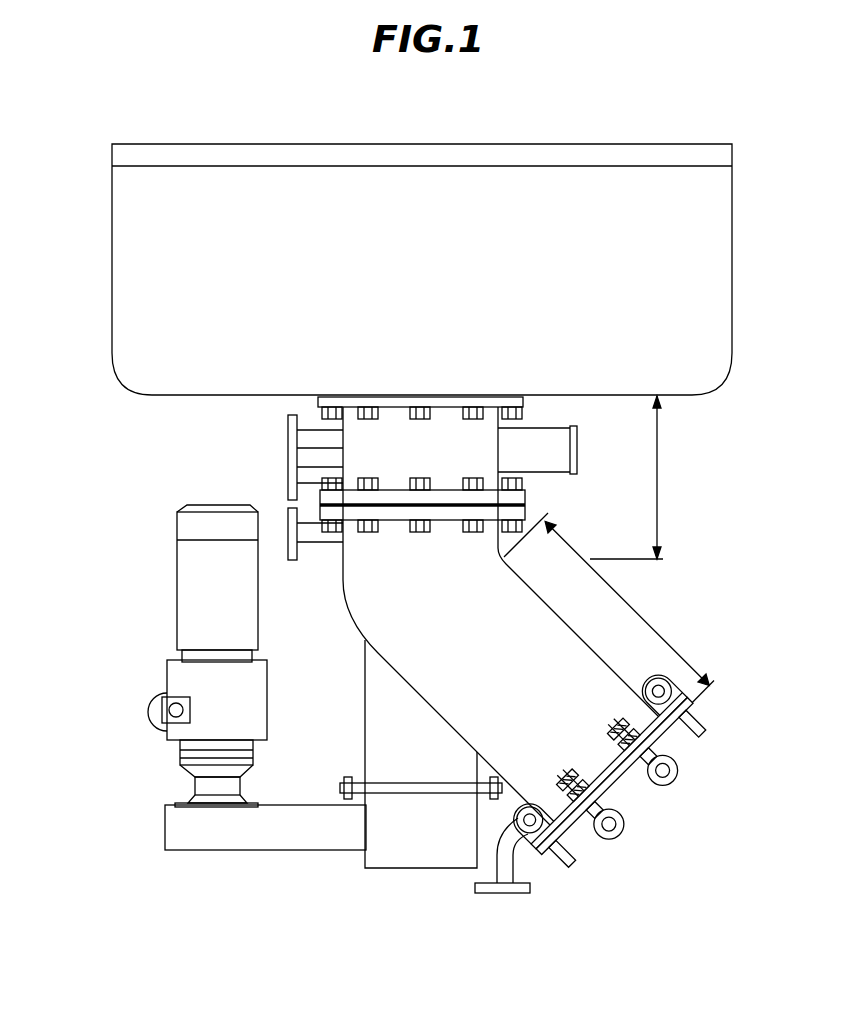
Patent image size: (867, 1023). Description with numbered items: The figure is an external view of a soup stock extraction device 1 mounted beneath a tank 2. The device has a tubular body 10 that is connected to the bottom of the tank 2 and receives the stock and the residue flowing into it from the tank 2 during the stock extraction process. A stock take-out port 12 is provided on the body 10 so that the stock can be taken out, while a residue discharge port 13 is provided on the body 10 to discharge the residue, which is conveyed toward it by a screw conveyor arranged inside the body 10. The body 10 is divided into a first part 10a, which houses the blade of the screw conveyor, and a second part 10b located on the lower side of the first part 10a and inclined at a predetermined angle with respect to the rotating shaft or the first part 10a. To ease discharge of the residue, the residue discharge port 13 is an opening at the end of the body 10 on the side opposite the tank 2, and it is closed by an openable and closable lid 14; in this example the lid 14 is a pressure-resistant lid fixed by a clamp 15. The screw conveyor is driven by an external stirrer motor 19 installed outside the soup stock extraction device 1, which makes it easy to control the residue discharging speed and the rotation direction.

The soup stock extraction device 1 is at (272, 457).
The tank 2 is at (655, 120).
The tubular body 10 is at (357, 590).
The first part 10a is at (649, 477).
The second part 10b is at (609, 608).
The stock take-out port 12 is at (542, 437).
The residue discharge port 13 is at (612, 775).
The lid 14 is at (576, 830).
The clamp 15 is at (678, 773).
The external stirrer motor 19 is at (172, 675).